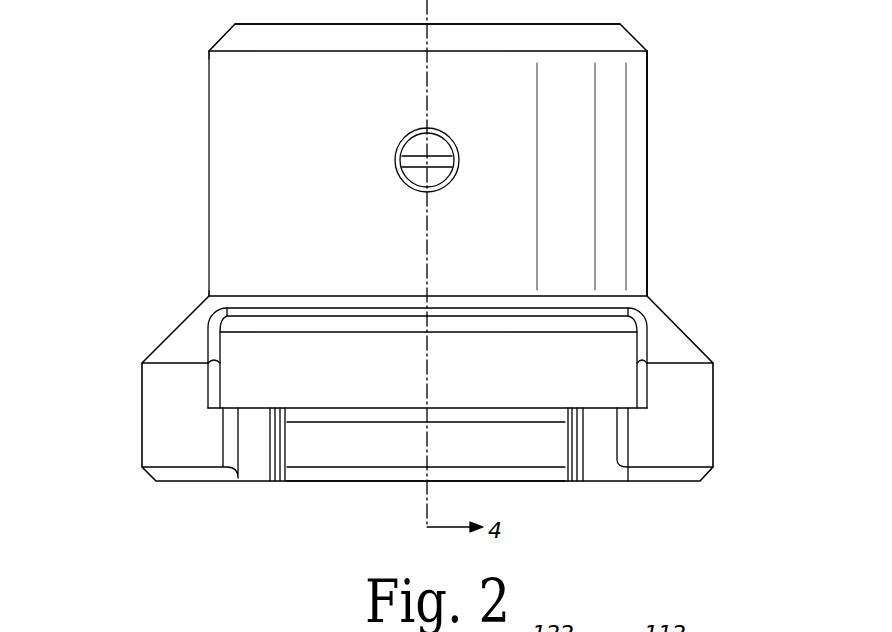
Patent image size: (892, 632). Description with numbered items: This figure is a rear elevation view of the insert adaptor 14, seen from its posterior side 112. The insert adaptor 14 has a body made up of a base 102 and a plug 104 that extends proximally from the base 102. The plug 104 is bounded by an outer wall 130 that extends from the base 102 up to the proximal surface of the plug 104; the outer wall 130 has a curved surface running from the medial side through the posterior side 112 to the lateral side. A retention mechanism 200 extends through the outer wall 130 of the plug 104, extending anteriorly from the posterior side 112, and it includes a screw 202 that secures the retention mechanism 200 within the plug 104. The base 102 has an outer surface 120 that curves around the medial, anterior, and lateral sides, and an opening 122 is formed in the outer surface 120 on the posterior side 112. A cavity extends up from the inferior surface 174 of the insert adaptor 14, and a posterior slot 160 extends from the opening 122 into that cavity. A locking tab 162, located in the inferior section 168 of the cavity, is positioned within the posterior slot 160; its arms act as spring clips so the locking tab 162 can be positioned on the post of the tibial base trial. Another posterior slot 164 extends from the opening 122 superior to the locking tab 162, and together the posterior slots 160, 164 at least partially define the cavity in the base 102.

The insert adaptor 14 is at (140, 117).
The outer wall 130 is at (640, 72).
The plug 104 is at (640, 142).
The posterior side 112 is at (640, 211).
The retention mechanism 200 is at (434, 148).
The screw 202 is at (434, 176).
The base 102 is at (702, 392).
The posterior slot 164 is at (626, 350).
The outer surface 120 is at (702, 438).
The inferior surface 174 is at (160, 487).
The locking tab 162 is at (278, 485).
The opening 122 is at (339, 452).
The inferior section 168 is at (381, 457).
The posterior slot 160 is at (521, 447).